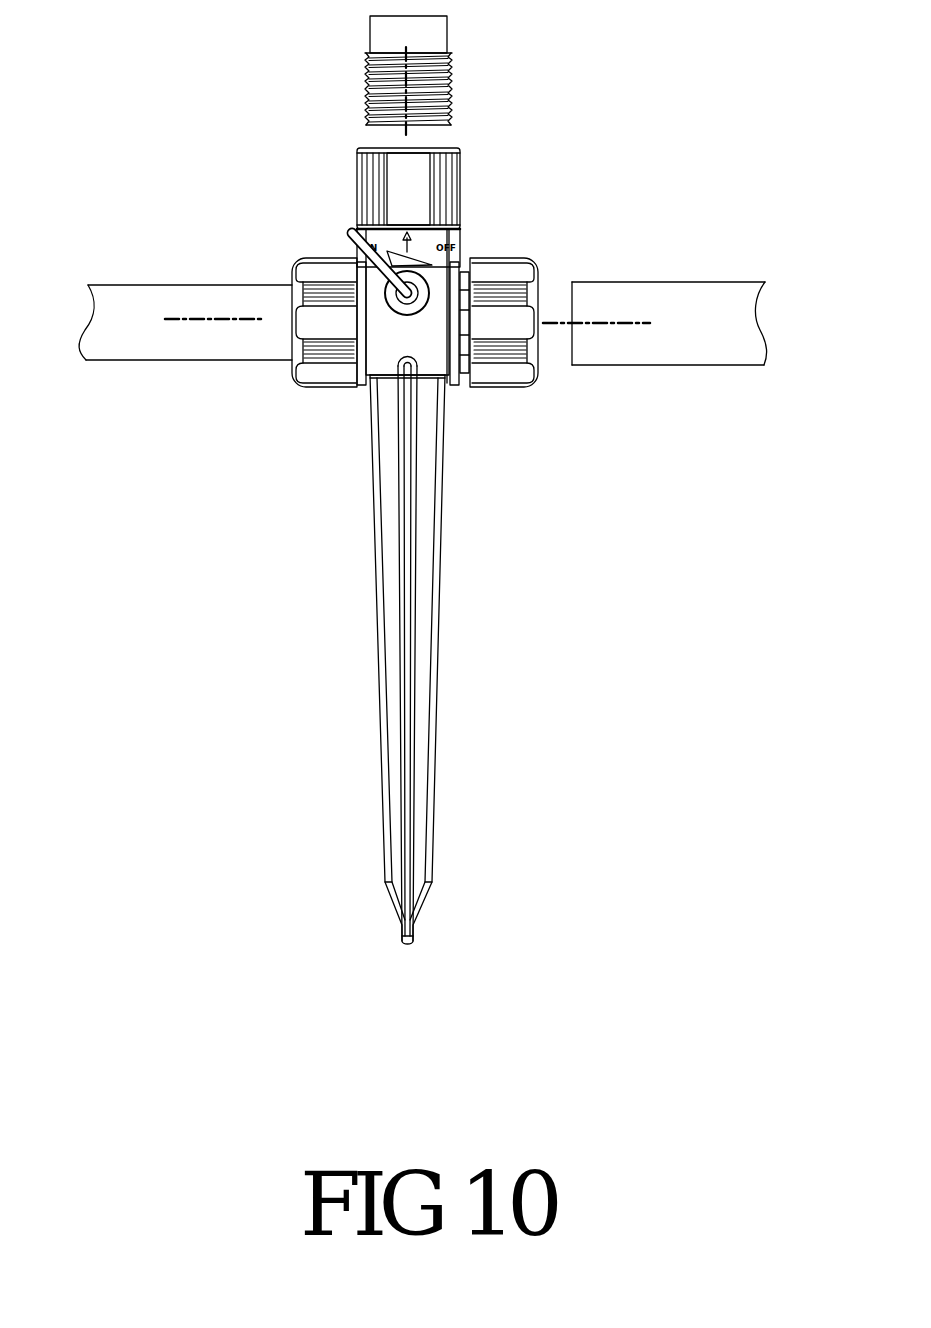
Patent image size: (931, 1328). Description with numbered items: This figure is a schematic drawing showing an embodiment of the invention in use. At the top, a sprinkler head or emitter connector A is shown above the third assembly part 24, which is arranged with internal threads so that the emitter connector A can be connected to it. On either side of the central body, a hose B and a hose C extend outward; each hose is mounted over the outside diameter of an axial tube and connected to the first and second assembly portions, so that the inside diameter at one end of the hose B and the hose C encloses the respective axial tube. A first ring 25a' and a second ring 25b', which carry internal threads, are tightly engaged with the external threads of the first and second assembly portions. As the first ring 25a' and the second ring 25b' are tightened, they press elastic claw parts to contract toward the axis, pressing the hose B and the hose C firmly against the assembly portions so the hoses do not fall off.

The emitter connector A is at (447, 37).
The third assembly part 24 is at (365, 178).
The first ring 25a' is at (322, 382).
The second ring 25b' is at (512, 382).
The hose B is at (183, 295).
The hose C is at (640, 292).